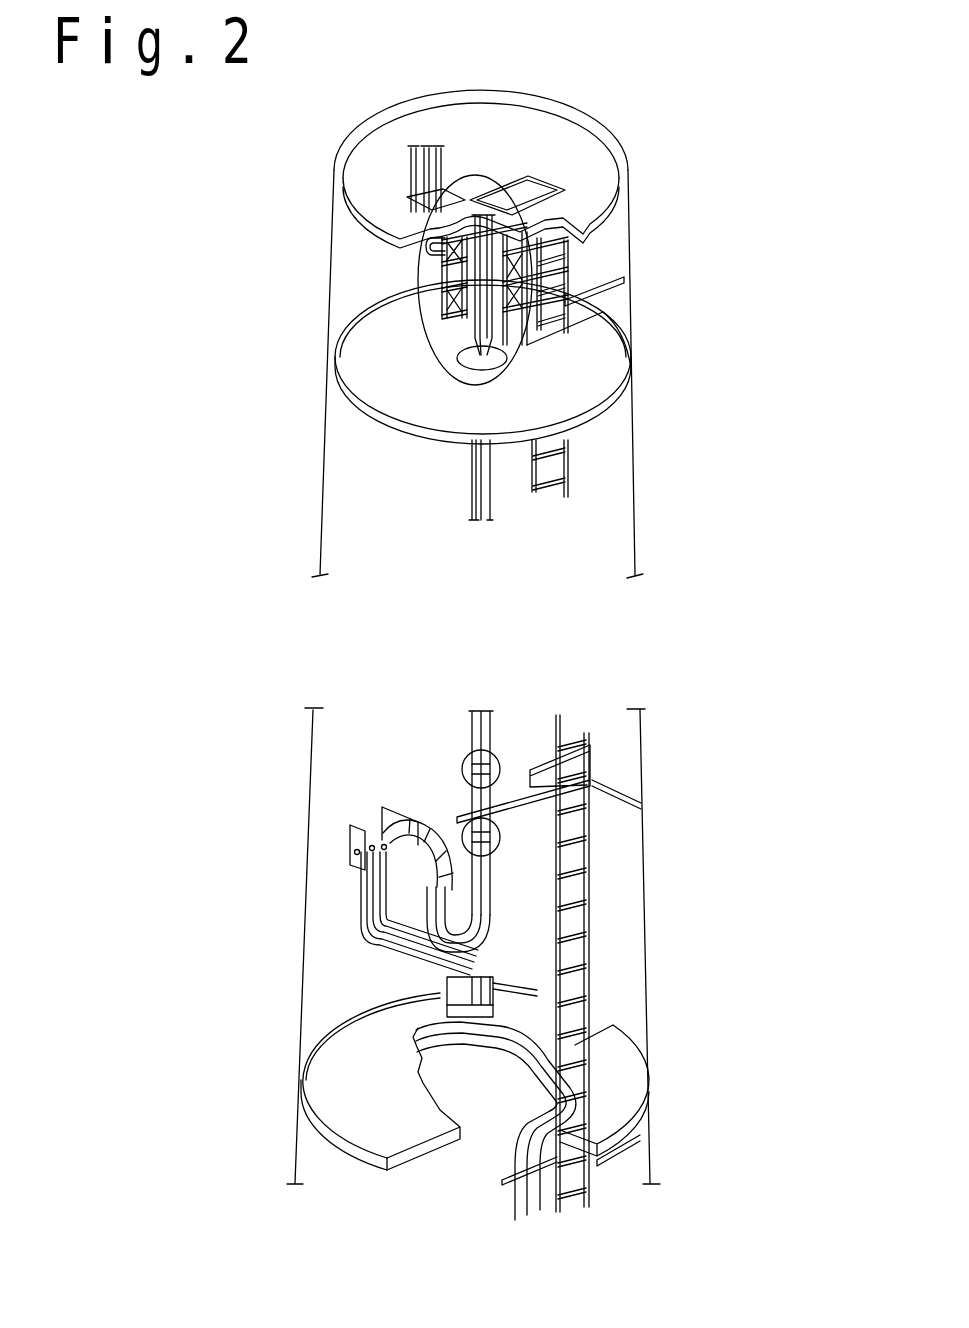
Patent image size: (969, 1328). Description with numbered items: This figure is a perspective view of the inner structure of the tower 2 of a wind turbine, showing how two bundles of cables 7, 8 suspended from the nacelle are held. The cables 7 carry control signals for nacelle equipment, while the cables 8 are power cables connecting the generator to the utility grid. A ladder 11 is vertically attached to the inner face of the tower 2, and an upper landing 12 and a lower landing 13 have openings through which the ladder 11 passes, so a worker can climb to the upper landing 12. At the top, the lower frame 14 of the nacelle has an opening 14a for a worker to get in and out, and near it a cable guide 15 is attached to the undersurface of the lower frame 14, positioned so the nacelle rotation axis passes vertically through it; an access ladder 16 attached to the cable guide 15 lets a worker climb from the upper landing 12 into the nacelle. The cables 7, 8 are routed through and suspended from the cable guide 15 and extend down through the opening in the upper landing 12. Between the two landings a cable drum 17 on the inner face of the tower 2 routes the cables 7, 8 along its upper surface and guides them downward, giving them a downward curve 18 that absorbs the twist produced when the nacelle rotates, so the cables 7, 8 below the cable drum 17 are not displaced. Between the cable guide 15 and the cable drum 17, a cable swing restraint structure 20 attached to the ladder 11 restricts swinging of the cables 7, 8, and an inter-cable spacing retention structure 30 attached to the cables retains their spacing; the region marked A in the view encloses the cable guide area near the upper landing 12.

The tower 2 is at (640, 923).
The cables 7 is at (472, 485).
The cables 8 is at (487, 502).
The ladder 11 is at (573, 470).
The upper landing 12 is at (350, 357).
The lower landing 13 is at (333, 1047).
The lower frame 14 is at (383, 147).
The opening 14a is at (540, 186).
The cable guide 15 is at (442, 272).
The access ladder 16 is at (527, 342).
The cable drum 17 is at (353, 840).
The downward curve 18 is at (492, 950).
The cable swing restraint structure 20 is at (503, 860).
The inter-cable spacing retention structure 30 is at (510, 752).
The region A is at (411, 331).